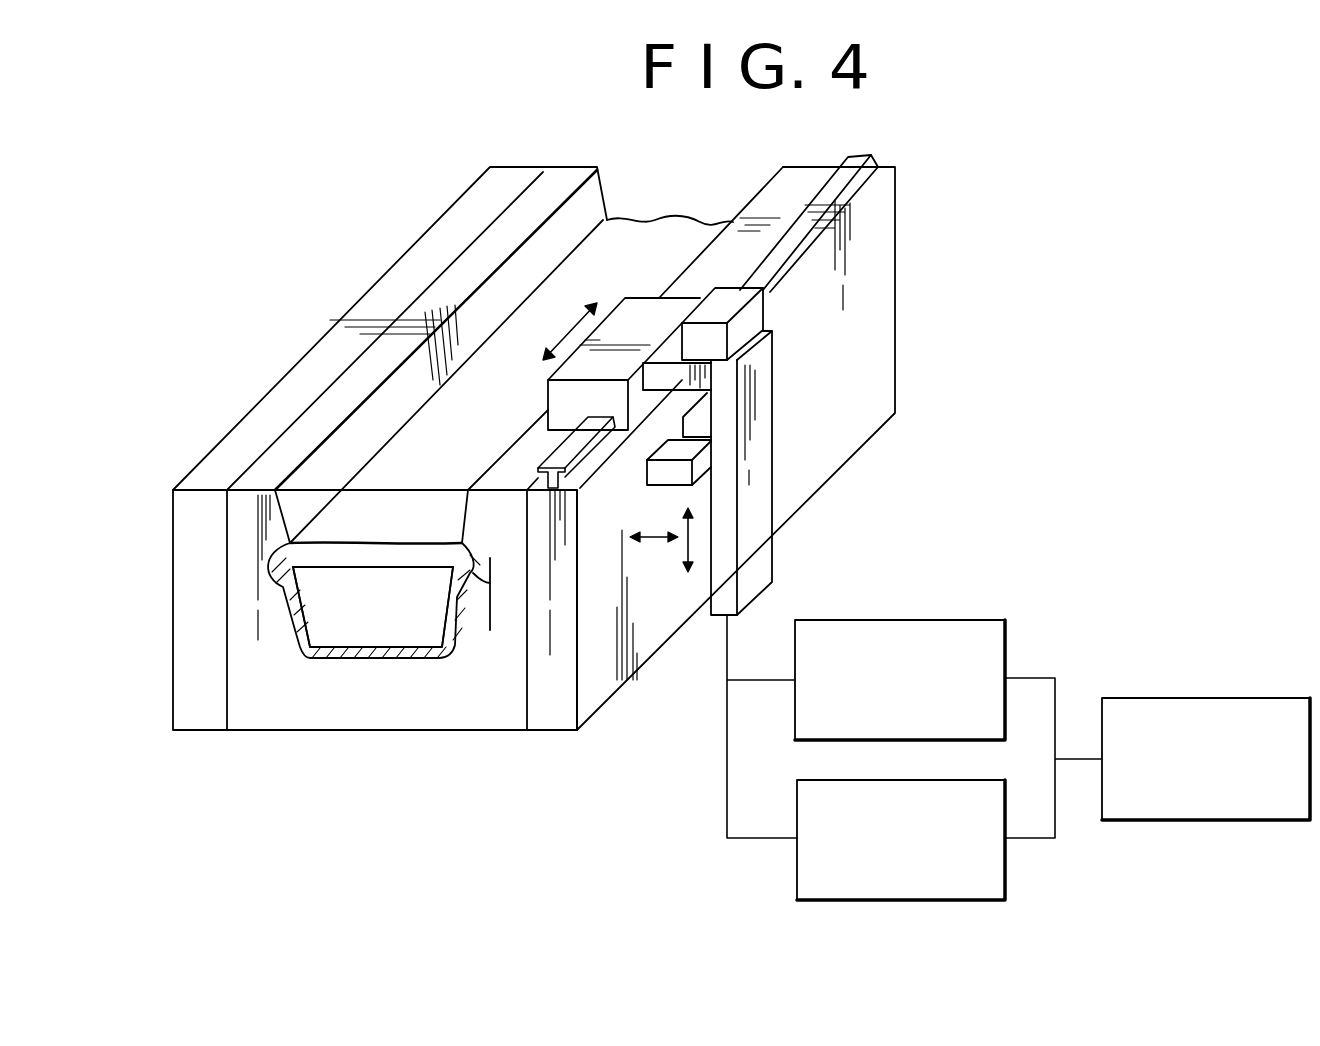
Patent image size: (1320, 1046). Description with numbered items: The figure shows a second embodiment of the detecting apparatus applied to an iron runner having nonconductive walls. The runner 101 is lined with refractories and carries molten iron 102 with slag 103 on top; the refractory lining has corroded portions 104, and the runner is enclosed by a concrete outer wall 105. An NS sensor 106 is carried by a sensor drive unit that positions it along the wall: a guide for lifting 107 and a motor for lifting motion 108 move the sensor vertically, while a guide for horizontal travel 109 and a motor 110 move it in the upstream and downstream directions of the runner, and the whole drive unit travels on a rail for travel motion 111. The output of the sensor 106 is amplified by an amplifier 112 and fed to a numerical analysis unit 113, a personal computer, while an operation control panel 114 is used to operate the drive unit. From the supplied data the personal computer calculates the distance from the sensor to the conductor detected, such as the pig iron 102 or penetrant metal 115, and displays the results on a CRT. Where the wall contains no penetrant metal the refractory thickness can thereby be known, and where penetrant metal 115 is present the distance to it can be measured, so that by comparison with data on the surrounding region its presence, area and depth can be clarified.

The runner 101 is at (448, 703).
The molten iron 102 is at (340, 633).
The slag 103 is at (428, 557).
The corroded portions 104 is at (368, 660).
The concrete outer wall 105 is at (548, 713).
The NS sensor 106 is at (648, 477).
The guide for lifting 107 is at (753, 407).
The motor for lifting motion 108 is at (757, 313).
The guide for horizontal travel 109 is at (662, 373).
The motor for movement in upstream and downstream directions 110 is at (568, 415).
The rail for travel motion 111 is at (852, 153).
The amplifier 112 is at (1037, 620).
The numerical analysis unit 113 is at (1170, 700).
The operation control panel 114 is at (998, 883).
The penetrant metal 115 is at (490, 630).